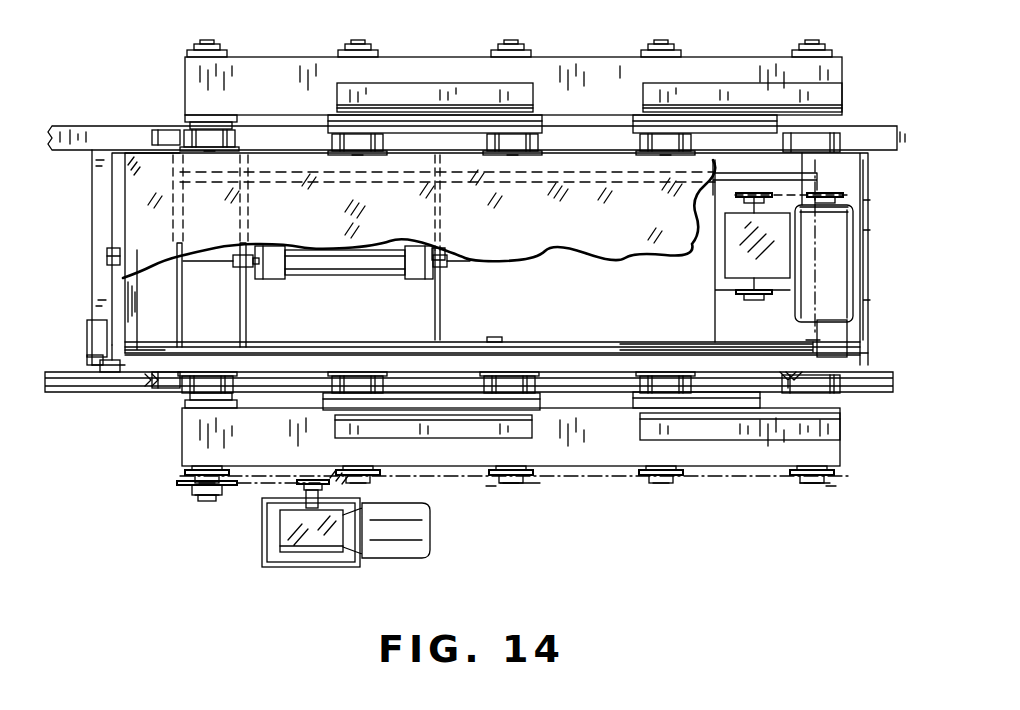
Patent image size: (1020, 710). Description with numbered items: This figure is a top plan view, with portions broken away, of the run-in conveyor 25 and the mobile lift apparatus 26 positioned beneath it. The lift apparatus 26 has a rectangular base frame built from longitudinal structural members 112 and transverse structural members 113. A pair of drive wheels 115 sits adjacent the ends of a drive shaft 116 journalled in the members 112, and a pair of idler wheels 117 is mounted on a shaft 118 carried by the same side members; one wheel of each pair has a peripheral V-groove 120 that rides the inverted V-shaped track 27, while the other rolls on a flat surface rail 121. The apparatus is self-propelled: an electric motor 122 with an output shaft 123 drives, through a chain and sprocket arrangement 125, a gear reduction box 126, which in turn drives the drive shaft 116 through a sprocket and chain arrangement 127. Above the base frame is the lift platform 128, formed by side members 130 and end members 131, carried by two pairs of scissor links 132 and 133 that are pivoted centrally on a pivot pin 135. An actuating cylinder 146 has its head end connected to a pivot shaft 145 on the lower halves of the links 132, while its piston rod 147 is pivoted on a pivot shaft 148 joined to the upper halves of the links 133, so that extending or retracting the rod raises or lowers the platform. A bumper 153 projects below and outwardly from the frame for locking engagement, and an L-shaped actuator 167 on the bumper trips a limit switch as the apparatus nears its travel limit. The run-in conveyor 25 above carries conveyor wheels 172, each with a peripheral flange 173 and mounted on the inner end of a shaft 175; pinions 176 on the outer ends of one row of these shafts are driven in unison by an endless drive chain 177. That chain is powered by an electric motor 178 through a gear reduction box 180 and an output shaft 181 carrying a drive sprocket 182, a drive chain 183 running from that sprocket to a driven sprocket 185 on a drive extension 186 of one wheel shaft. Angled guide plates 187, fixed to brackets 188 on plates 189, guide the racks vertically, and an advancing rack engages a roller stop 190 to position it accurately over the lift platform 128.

The run-in conveyor 25 is at (848, 478).
The mobile lift apparatus 26 is at (740, 150).
The inverted V-shaped track 27 is at (60, 392).
The longitudinal structural member 112 is at (120, 378).
The transverse structural member 113 is at (92, 182).
The drive wheel 115 is at (838, 134).
The drive shaft 116 is at (822, 345).
The idler wheel 117 is at (165, 138).
The shaft 118 is at (178, 280).
The peripheral V-groove 120 is at (150, 382).
The flat surface rail 121 is at (80, 135).
The electric motor 122 is at (850, 262).
The output shaft 123 is at (822, 208).
The chain and sprocket arrangement 125 is at (848, 194).
The gear reduction box 126 is at (735, 250).
The sprocket and chain arrangement 127 is at (778, 296).
The lift platform 128 is at (135, 150).
The side member 130 is at (152, 350).
The end member 131 is at (128, 293).
The scissor link 132 is at (530, 340).
The scissor link 133 is at (650, 345).
The pivot pin 135 is at (490, 190).
The pivot shaft 145 is at (443, 295).
The actuating cylinder 146 is at (322, 266).
The piston rod 147 is at (255, 262).
The pivot shaft 148 is at (247, 308).
The bumper 153 is at (92, 330).
The L-shaped actuator 167 is at (90, 360).
The conveyor wheel 172 is at (236, 133).
The peripheral flange 173 is at (228, 128).
The shaft 175 is at (500, 500).
The pinion 176 is at (183, 478).
The endless drive chain 177 is at (595, 485).
The electric motor 178 is at (400, 545).
The gear reduction box 180 is at (290, 540).
The output shaft 181 is at (310, 555).
The drive sprocket 182 is at (320, 488).
The drive chain 183 is at (250, 493).
The driven sprocket 185 is at (175, 490).
The drive extension 186 is at (200, 505).
The angled guide plate 187 is at (398, 125).
The bracket 188 is at (535, 97).
The plate 189 is at (460, 65).
The roller stop 190 is at (110, 260).